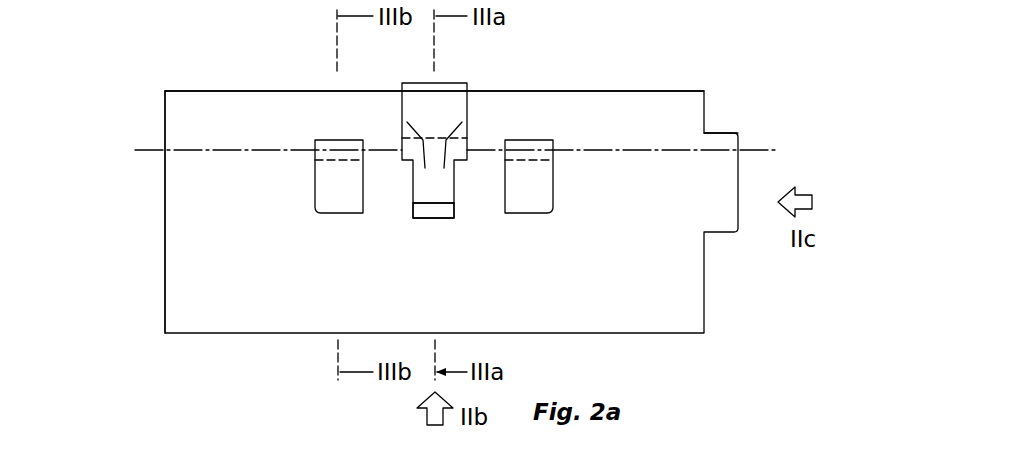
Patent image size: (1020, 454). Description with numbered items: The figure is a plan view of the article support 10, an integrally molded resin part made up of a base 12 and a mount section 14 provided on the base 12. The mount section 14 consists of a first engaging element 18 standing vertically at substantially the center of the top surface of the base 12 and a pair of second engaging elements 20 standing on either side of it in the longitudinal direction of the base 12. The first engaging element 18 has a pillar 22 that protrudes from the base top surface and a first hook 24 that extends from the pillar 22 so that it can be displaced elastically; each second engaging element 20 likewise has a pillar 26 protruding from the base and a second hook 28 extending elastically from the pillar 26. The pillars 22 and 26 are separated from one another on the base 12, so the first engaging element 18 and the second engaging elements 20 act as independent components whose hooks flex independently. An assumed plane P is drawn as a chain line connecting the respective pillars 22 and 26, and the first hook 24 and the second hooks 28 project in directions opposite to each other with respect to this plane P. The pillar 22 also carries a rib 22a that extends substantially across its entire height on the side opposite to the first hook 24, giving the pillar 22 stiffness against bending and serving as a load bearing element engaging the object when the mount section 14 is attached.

The article support 10 is at (145, 175).
The base 12 is at (165, 253).
The mount section 14 is at (570, 127).
The first engaging element 18 is at (427, 99).
The second engaging element 20 is at (312, 143).
The pillar 22 is at (457, 193).
The rib 22a is at (423, 190).
The first hook 24 is at (453, 97).
The pillar 26 is at (333, 139).
The second hook 28 is at (335, 207).
The assumed plane P is at (752, 150).